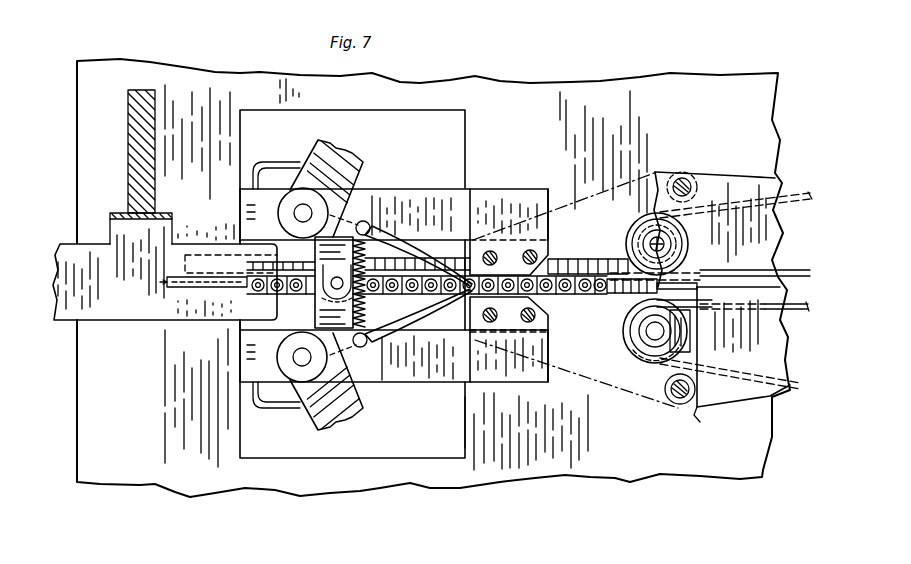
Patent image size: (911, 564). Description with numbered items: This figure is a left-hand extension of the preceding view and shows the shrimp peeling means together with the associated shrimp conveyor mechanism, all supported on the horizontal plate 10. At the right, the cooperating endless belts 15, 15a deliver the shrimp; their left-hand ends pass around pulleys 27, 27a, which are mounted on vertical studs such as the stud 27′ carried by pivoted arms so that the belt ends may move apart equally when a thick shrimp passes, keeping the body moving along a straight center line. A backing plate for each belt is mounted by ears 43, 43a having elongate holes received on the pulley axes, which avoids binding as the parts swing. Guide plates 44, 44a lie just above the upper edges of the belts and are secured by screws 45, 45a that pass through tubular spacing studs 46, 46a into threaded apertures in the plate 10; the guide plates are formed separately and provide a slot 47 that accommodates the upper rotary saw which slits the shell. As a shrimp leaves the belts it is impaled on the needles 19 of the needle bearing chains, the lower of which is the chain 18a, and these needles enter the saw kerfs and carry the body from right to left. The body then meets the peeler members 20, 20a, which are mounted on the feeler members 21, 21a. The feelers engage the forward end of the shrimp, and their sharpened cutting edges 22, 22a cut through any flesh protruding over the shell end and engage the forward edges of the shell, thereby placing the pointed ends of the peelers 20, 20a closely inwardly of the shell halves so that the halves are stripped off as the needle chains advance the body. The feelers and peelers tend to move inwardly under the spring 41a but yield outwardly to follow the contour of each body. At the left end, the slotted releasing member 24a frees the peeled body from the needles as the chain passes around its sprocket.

The horizontal plate 10 is at (612, 480).
The endless belt 15 is at (642, 226).
The endless belt 15a is at (800, 388).
The needle bearing chain 18a is at (573, 262).
The needles 19 is at (293, 290).
The peeler member 20 is at (400, 250).
The peeler member 20a is at (435, 303).
The feeler member 21 is at (448, 168).
The feeler member 21a is at (435, 375).
The cutting edge 22 is at (507, 245).
The cutting edge 22a is at (513, 300).
The releasing member 24a is at (72, 305).
The pulley 27 is at (674, 231).
The vertical stud 27′ is at (664, 244).
The pulley 27a is at (665, 360).
The spring 41a is at (363, 347).
The ear 43 is at (647, 227).
The ear 43a is at (633, 355).
The guide plate 44 is at (752, 176).
The guide plate 44a is at (737, 400).
The screw 45 is at (683, 183).
The screw 45a is at (680, 398).
The tubular spacing stud 46 is at (668, 168).
The tubular spacing stud 46a is at (693, 408).
The slot 47 is at (677, 288).